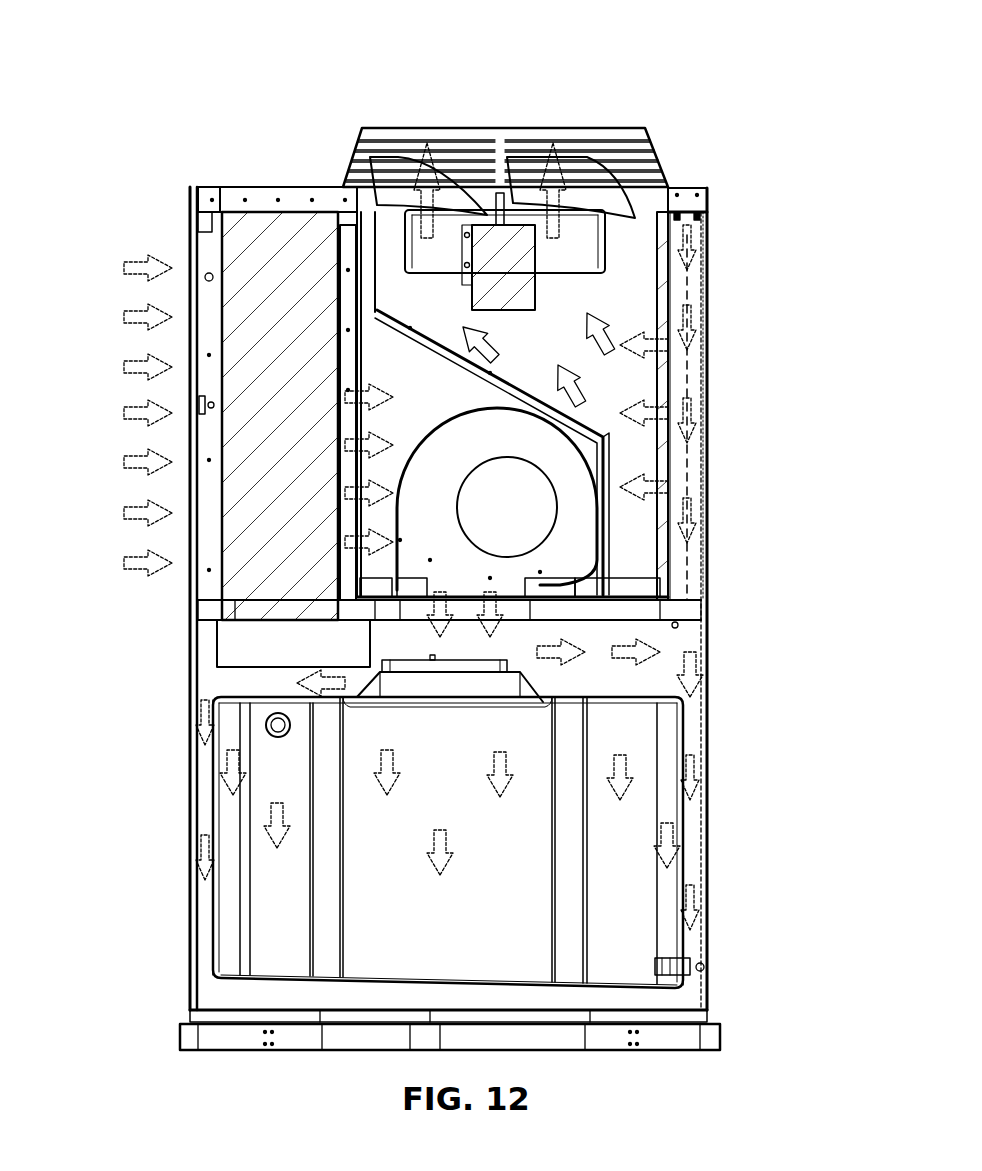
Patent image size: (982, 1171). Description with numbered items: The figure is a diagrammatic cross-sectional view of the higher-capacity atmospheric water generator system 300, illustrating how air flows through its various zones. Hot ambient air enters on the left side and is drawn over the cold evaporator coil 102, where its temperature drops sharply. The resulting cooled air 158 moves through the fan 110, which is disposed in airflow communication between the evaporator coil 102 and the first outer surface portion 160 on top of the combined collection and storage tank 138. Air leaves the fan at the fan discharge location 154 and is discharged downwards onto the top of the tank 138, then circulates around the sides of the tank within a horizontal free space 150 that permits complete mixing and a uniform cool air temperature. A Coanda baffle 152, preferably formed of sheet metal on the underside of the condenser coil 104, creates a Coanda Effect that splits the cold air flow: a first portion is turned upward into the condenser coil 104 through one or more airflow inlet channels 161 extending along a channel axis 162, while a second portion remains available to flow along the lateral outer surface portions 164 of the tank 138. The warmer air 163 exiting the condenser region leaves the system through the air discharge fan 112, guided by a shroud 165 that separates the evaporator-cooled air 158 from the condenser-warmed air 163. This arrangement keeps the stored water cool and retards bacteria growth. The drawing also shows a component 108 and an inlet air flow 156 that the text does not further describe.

The atmospheric water generator system 300 is at (198, 100).
The evaporator coil 102 is at (276, 242).
The condenser coil 104 is at (665, 195).
The air discharge fan 112 is at (525, 258).
The fan 110 is at (510, 520).
The distribution box 108 is at (235, 640).
The combined collection and storage tank 138 is at (512, 906).
The horizontal free space 150 is at (192, 903).
The Coanda baffle 152 is at (700, 628).
The fan discharge location 154 is at (185, 648).
The inlet air flow 156 is at (98, 400).
The cooled air 158 is at (408, 405).
The first outer surface portion 160 is at (632, 686).
The airflow inlet channel 161 is at (700, 530).
The channel axis 162 is at (690, 335).
The warmer air 163 is at (572, 410).
The lateral outer surface portions 164 is at (192, 790).
The shroud 165 is at (598, 373).